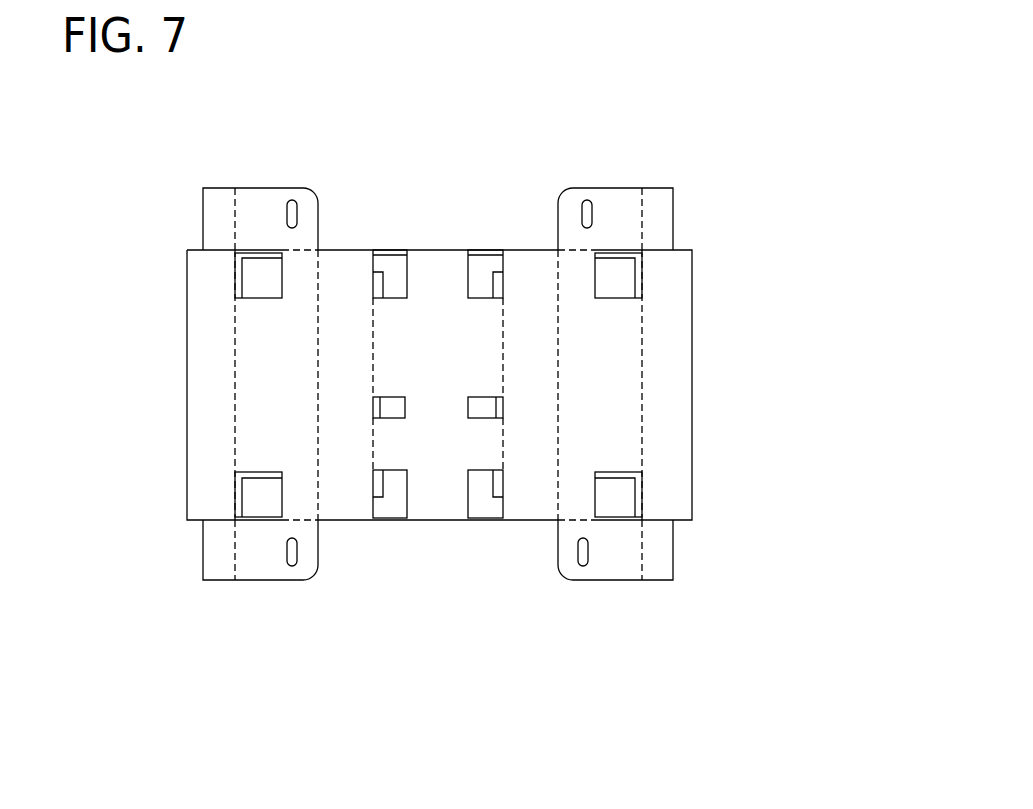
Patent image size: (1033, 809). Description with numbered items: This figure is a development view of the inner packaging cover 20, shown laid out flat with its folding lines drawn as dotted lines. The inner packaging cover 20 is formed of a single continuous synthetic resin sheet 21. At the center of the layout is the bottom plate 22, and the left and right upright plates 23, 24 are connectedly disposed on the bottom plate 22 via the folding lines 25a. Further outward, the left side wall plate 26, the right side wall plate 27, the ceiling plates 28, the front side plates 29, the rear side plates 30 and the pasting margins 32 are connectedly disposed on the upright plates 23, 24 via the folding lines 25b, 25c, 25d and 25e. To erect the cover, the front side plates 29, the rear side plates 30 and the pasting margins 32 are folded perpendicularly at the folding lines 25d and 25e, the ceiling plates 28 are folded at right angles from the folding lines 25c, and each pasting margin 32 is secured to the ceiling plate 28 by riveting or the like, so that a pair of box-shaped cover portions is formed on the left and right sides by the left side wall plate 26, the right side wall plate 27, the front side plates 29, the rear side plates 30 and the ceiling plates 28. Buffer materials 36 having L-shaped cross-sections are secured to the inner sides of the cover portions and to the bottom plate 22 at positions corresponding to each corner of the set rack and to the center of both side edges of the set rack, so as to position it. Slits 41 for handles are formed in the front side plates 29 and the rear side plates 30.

The inner packaging cover 20 is at (530, 218).
The synthetic resin sheet 21 is at (726, 303).
The bottom plate 22 is at (419, 508).
The left upright plate 23 is at (333, 485).
The right upright plate 24 is at (527, 515).
The folding line 25a is at (380, 279).
The folding line 25b is at (557, 298).
The folding line 25c is at (235, 444).
The folding line 25d is at (267, 250).
The folding line 25e is at (235, 227).
The left side wall plate 26 is at (272, 382).
The right side wall plate 27 is at (615, 410).
The ceiling plate 28 is at (203, 313).
The front side plate 29 is at (267, 565).
The rear side plate 30 is at (277, 203).
The pasting margin 32 is at (213, 220).
The buffer material 36 is at (484, 284).
The slit 41 is at (296, 208).